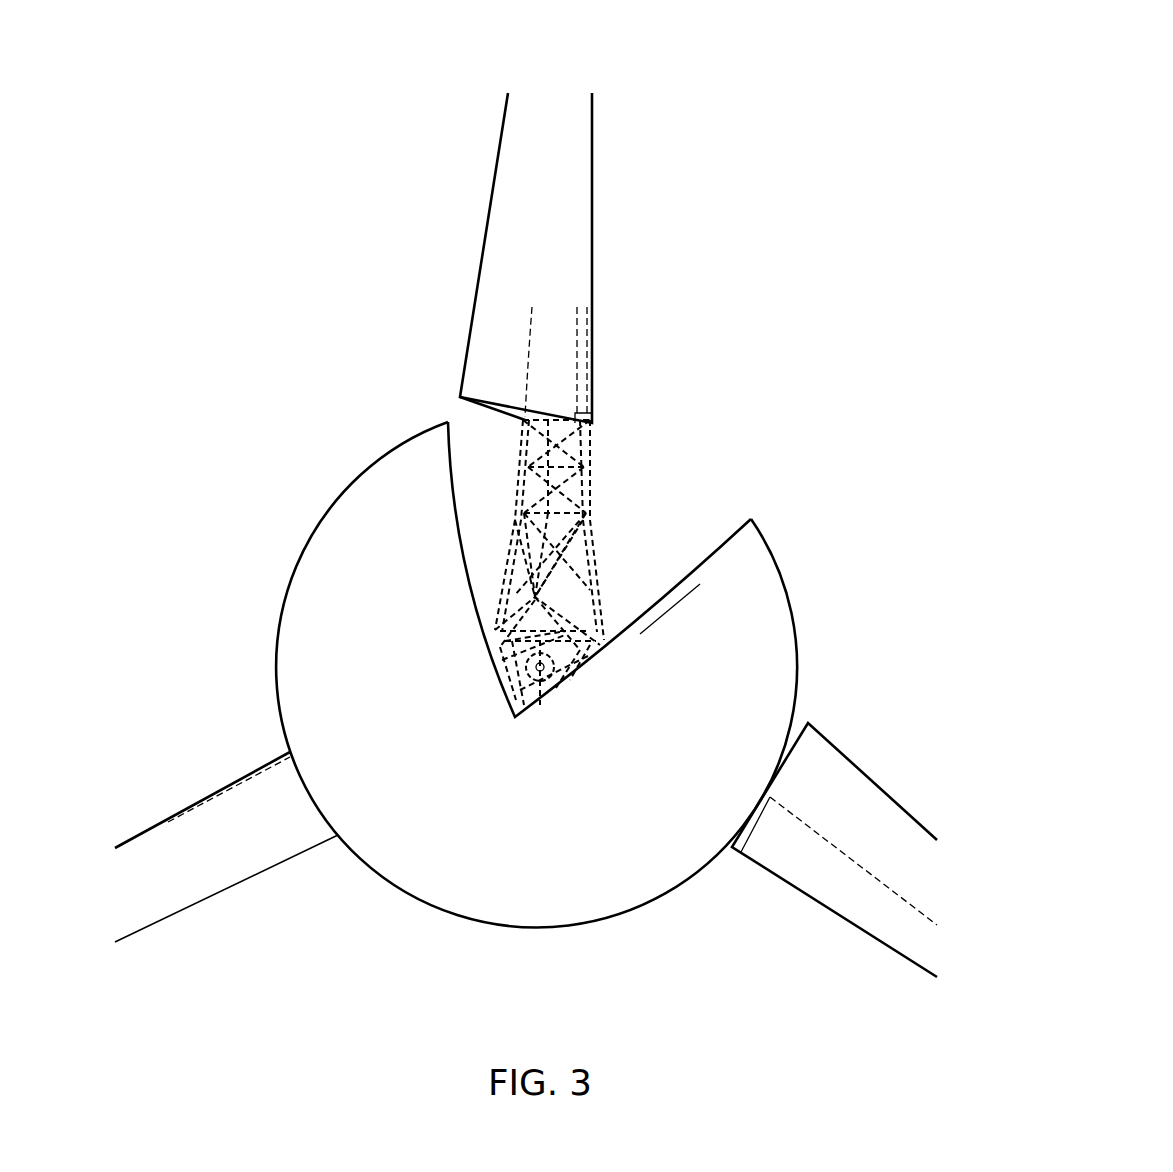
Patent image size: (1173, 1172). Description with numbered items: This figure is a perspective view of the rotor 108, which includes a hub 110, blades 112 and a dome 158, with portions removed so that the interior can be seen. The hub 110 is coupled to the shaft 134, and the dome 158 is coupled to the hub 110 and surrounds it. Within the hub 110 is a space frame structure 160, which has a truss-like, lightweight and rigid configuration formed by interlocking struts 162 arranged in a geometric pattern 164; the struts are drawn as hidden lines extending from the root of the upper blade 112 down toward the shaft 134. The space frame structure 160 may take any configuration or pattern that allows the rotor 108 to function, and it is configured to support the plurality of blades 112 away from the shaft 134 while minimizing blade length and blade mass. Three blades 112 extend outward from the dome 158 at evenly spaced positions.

The rotor 108 is at (824, 342).
The hub 110 is at (486, 507).
The blades 112 is at (592, 203).
The shaft 134 is at (537, 669).
The dome 158 is at (782, 632).
The space frame structure 160 is at (513, 603).
The interlocking struts 162 is at (497, 630).
The geometric pattern 164 is at (614, 629).